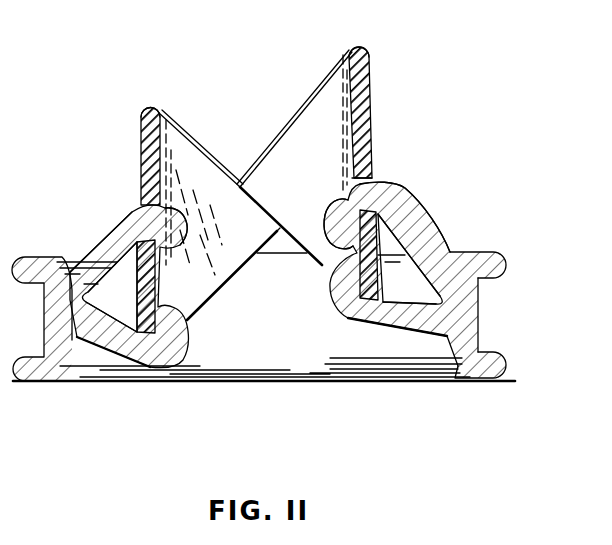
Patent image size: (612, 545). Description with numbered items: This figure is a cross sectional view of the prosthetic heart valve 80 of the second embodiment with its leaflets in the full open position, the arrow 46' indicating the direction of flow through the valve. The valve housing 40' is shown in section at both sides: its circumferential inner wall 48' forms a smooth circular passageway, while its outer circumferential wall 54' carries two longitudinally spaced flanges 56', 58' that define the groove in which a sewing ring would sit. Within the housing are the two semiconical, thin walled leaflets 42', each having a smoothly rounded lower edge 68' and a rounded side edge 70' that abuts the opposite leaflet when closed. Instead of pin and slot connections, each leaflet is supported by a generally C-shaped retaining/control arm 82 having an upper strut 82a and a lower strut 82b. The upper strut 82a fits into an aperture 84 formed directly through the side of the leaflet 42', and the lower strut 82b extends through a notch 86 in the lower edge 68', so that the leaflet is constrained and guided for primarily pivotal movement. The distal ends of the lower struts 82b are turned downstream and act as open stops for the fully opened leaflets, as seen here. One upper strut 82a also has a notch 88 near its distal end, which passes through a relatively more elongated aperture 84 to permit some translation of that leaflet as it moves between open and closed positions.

The prosthetic heart valve 80 is at (269, 272).
The retaining/control arm 82 is at (95, 244).
The upper strut 82a is at (117, 220).
The lower strut 82b is at (152, 365).
The aperture 84 is at (157, 203).
The notch 86 is at (137, 327).
The notch 88 is at (360, 213).
The leaflet 42' is at (260, 109).
The side edge 70' is at (255, 65).
The valve housing 40' is at (299, 314).
The flange 58' is at (518, 259).
The outer circumferential wall 54' is at (514, 315).
The flange 56' is at (515, 385).
The inner wall 48' is at (255, 189).
The lower edge 68' is at (254, 253).
The flow direction arrow 46' is at (295, 452).